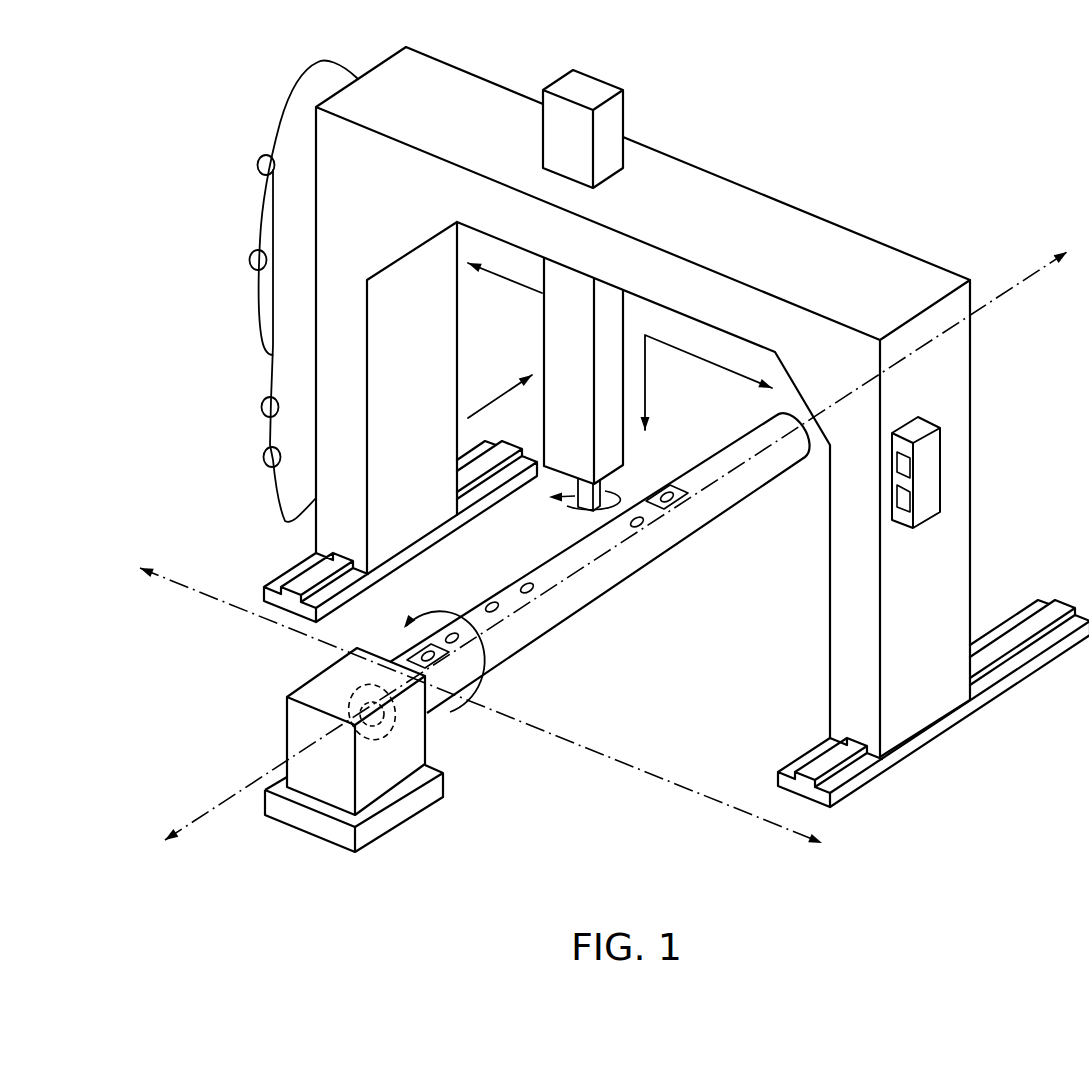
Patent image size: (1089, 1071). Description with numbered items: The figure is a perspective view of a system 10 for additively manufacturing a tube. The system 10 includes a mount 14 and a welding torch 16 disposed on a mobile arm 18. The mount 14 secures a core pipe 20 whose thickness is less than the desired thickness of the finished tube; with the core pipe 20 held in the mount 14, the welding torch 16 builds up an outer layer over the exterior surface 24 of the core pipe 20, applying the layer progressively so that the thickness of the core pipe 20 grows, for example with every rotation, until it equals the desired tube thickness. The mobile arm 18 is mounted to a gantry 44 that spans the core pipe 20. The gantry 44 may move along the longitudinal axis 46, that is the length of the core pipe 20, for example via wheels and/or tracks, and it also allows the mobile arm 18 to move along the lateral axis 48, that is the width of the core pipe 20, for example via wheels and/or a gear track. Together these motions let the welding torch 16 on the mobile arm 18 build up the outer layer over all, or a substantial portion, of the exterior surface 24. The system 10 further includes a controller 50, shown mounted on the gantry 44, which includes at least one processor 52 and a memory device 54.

The system 10 is at (79, 112).
The mount 14 is at (303, 713).
The welding torch 16 is at (603, 486).
The mobile arm 18 is at (610, 141).
The core pipe 20 is at (602, 563).
The exterior surface 24 is at (557, 613).
The gantry 44 is at (840, 218).
The longitudinal axis/length 46 is at (1040, 272).
The lateral axis/width 48 is at (613, 757).
The controller 50 is at (969, 479).
The processor 52 is at (905, 507).
The memory device 54 is at (905, 472).